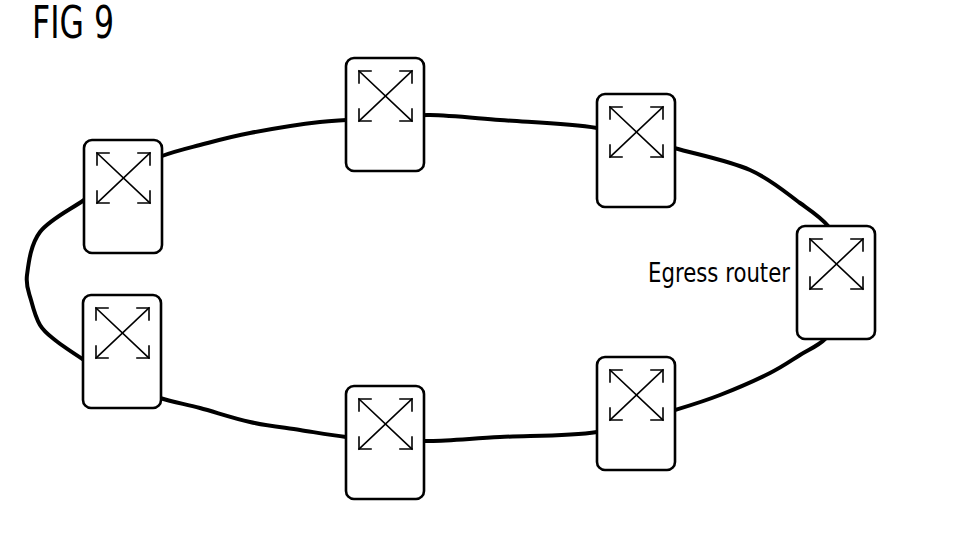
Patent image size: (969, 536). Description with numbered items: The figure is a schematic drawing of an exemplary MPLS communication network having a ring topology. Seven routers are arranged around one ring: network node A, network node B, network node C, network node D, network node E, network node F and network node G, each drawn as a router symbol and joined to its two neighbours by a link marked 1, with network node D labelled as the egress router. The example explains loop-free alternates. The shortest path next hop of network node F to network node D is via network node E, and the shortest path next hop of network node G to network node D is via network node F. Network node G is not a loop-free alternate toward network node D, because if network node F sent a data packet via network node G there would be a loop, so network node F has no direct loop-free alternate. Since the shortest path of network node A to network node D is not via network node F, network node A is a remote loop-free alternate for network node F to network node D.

The link cost 1 is at (435, 257).
The network node A is at (123, 196).
The router B is at (385, 114).
The router C is at (636, 150).
The network node D is at (836, 282).
The network node E is at (636, 413).
The network node F is at (385, 442).
The network node G is at (122, 351).